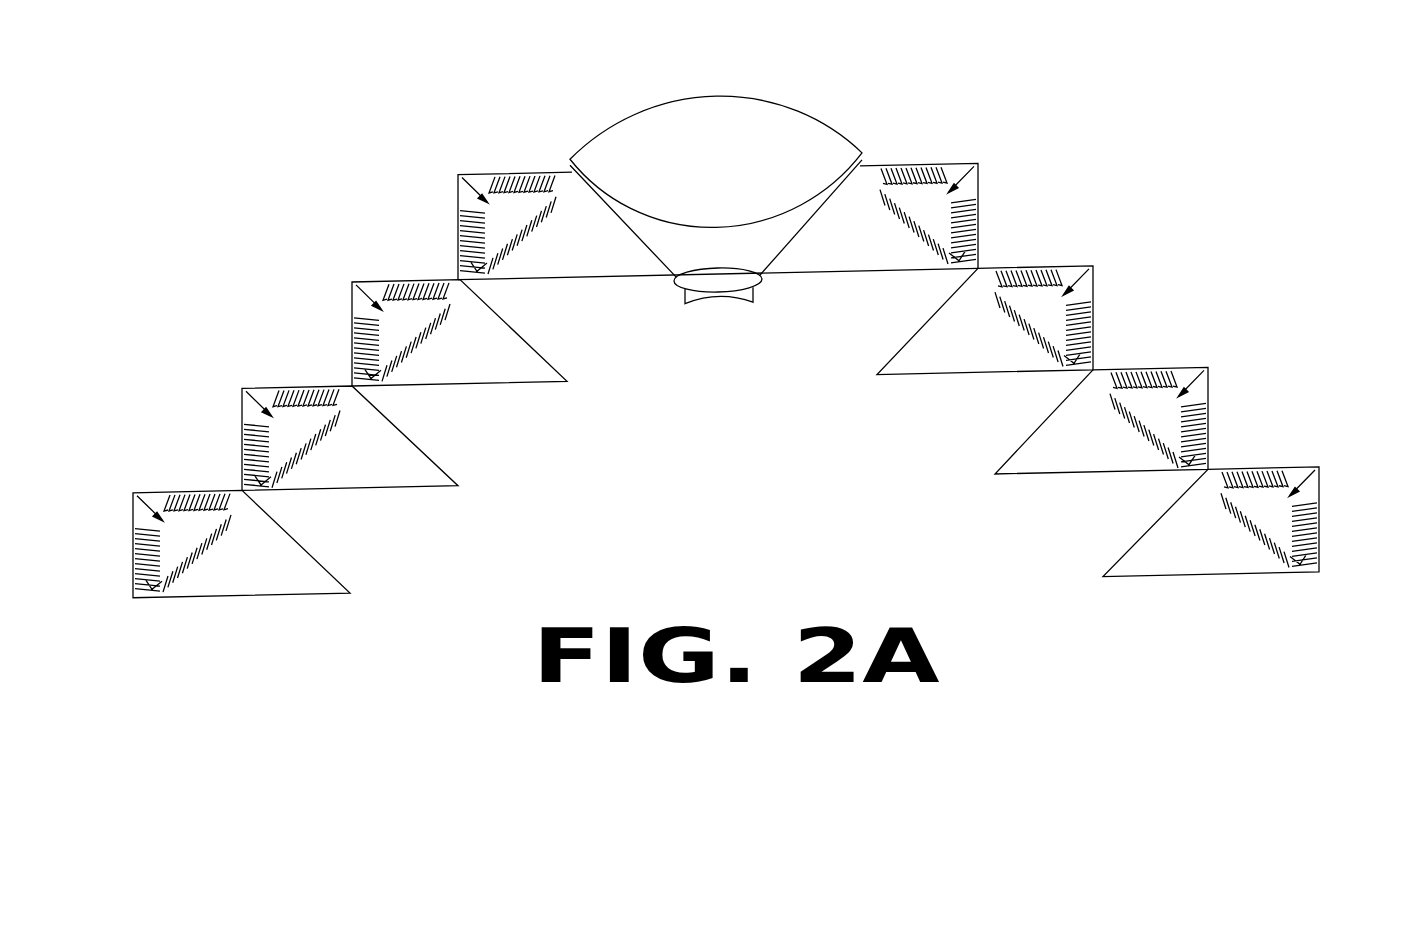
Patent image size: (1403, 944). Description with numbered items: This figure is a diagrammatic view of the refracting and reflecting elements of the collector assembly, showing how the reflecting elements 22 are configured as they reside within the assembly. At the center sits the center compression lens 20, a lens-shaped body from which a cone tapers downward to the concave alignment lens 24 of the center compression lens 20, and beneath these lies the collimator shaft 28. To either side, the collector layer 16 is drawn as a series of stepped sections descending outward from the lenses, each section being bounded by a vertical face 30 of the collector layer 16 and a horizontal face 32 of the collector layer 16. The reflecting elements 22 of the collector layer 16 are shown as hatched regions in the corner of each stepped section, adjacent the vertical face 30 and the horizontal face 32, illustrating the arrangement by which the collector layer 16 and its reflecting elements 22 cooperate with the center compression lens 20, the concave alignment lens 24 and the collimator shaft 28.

The collector layer 16 is at (160, 481).
The center compression lens 20 is at (790, 107).
The reflecting elements 22 is at (283, 479).
The concave alignment lens 24 is at (715, 298).
The collimator shaft 28 is at (760, 489).
The vertical face 30 is at (980, 184).
The horizontal face 32 is at (948, 169).